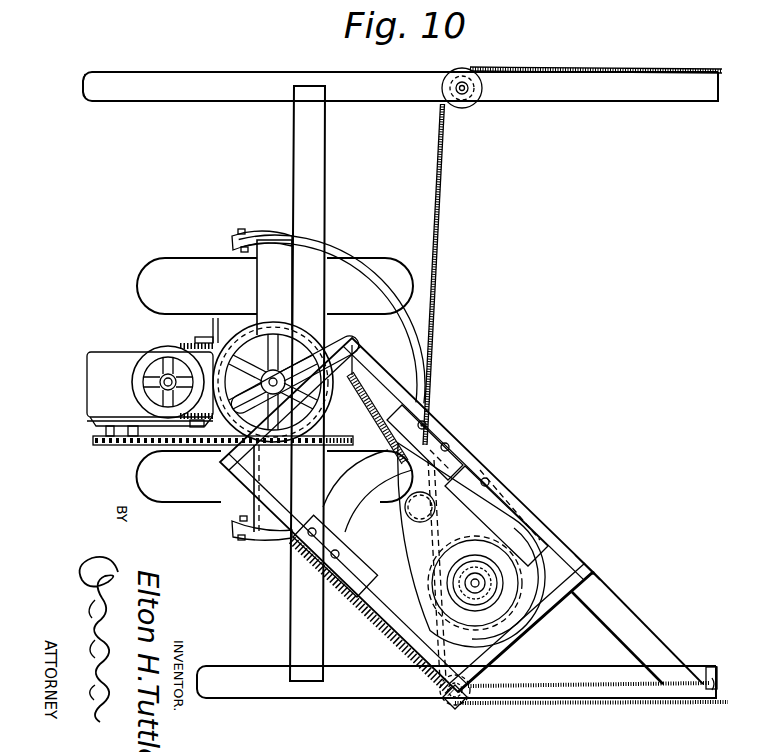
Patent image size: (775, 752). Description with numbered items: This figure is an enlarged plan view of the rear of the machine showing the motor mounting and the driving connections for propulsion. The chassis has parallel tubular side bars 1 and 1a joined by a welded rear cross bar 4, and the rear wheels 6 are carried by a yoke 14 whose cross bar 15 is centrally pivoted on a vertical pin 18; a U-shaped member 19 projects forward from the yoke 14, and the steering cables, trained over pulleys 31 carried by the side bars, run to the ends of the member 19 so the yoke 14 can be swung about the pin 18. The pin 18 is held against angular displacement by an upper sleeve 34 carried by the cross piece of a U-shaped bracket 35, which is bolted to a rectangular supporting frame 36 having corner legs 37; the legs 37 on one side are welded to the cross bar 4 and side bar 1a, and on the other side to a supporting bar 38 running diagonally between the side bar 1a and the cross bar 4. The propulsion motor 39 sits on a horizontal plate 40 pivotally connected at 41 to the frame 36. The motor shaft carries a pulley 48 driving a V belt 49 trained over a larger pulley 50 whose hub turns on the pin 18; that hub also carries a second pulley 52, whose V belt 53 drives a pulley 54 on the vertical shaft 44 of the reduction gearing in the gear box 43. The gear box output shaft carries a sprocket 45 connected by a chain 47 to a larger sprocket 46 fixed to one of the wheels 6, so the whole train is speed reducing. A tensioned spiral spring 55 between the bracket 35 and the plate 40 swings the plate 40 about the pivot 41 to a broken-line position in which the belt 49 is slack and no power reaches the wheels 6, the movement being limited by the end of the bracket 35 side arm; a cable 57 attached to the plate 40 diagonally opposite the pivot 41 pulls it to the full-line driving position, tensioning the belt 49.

The side bar 1 is at (590, 99).
The side bar 1a is at (583, 670).
The rear cross bar 4 is at (318, 127).
The rear wheel 6 is at (166, 266).
The yoke 14 is at (266, 248).
The cross bar 15 is at (273, 386).
The vertical pin 18 is at (290, 352).
The U-shaped member 19 is at (300, 244).
The pulley 31 is at (462, 108).
The upper sleeve 34 is at (294, 375).
The U-shaped bracket 35 is at (440, 440).
The supporting frame 36 is at (470, 475).
The corner leg 37 is at (425, 415).
The supporting bar 38 is at (617, 613).
The propulsion motor 39 is at (520, 548).
The horizontal plate 40 is at (560, 557).
The pivot 41 is at (490, 481).
The gear box 43 is at (79, 381).
The vertical shaft 44 is at (160, 381).
The sprocket 45 is at (125, 430).
The sprocket 46 is at (335, 440).
The chain 47 is at (122, 446).
The pulley 48 is at (415, 526).
The V belt 49 is at (382, 460).
The pulley 50 is at (345, 345).
The second pulley 52 is at (266, 370).
The V belt 53 is at (204, 345).
The pulley 54 is at (165, 346).
The spiral spring 55 is at (380, 630).
The cable 57 is at (712, 666).